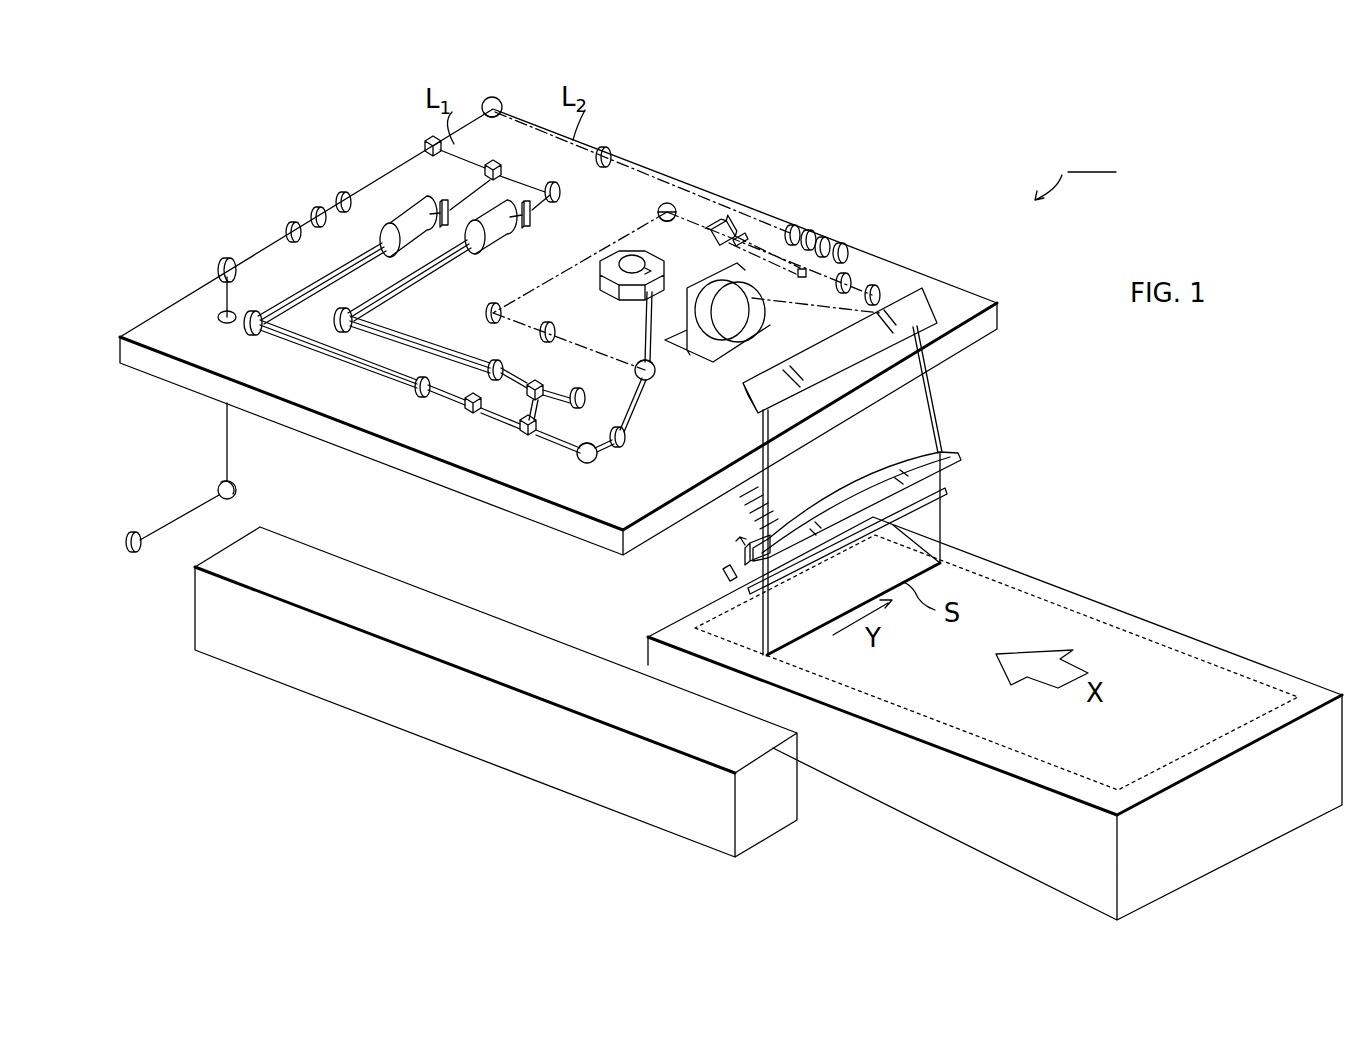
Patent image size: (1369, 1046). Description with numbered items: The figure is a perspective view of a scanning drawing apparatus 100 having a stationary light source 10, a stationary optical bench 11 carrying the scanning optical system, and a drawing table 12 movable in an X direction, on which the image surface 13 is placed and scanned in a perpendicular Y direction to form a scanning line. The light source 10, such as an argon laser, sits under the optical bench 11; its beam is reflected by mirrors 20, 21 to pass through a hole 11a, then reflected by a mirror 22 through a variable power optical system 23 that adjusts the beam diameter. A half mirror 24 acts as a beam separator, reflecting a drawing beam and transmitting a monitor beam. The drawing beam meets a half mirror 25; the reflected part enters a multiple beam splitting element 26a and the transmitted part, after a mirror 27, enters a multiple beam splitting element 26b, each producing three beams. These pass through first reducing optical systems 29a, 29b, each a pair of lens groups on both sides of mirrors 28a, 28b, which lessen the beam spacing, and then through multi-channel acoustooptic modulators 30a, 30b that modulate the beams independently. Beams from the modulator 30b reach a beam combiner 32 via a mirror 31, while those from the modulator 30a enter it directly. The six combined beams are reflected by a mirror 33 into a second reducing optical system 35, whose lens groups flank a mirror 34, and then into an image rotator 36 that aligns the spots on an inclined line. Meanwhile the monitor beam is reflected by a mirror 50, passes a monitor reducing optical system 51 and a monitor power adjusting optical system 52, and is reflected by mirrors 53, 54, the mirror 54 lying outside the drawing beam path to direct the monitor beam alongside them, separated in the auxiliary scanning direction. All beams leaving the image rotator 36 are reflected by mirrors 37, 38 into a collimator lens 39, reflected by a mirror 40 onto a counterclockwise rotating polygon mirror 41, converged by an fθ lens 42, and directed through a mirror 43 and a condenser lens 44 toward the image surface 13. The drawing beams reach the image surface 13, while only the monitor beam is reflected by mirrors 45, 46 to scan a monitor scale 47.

The light source 10 is at (448, 740).
The optical bench 11 is at (560, 520).
The hole 11a is at (220, 315).
The drawing table 12 is at (938, 846).
The image surface 13 is at (1050, 598).
The mirror 20 is at (125, 541).
The mirror 21 is at (218, 486).
The mirror 22 is at (222, 262).
The variable power optical system 23 is at (278, 228).
The half mirror 24 is at (425, 146).
The half mirror 25 is at (505, 172).
The multiple beam splitting element 26a is at (444, 200).
The multiple beam splitting element 26b is at (535, 215).
The mirror 27 is at (560, 192).
The mirror 28a is at (250, 334).
The mirror 28b is at (343, 332).
The first reducing optical system 29a is at (405, 222).
The first reducing optical system 29b is at (490, 245).
The multi-channel acoustooptic modulator 30a is at (472, 415).
The multi-channel acoustooptic modulator 30b is at (530, 382).
The mirror 31 is at (585, 398).
The beam combiner 32 is at (525, 440).
The mirror 33 is at (588, 464).
The mirror 34 is at (878, 292).
The second reducing optical system 35 is at (622, 442).
The image rotator 36 is at (728, 225).
The mirror 37 is at (670, 203).
The mirror 38 is at (485, 310).
The collimator lens 39 is at (555, 330).
The mirror 40 is at (656, 372).
The polygon mirror 41 is at (645, 264).
The fθ lens 42 is at (740, 302).
The mirror 43 is at (912, 322).
The condenser lens 44 is at (950, 456).
The mirror 45 is at (945, 495).
The mirror 46 is at (727, 565).
The monitor scale 47 is at (740, 537).
The mirror 50 is at (494, 117).
The monitor reducing optical system 51 is at (607, 150).
The monitor power adjusting optical system 52 is at (810, 230).
The mirror 53 is at (825, 238).
The mirror 54 is at (802, 282).
The scanning drawing apparatus 100 is at (1076, 171).